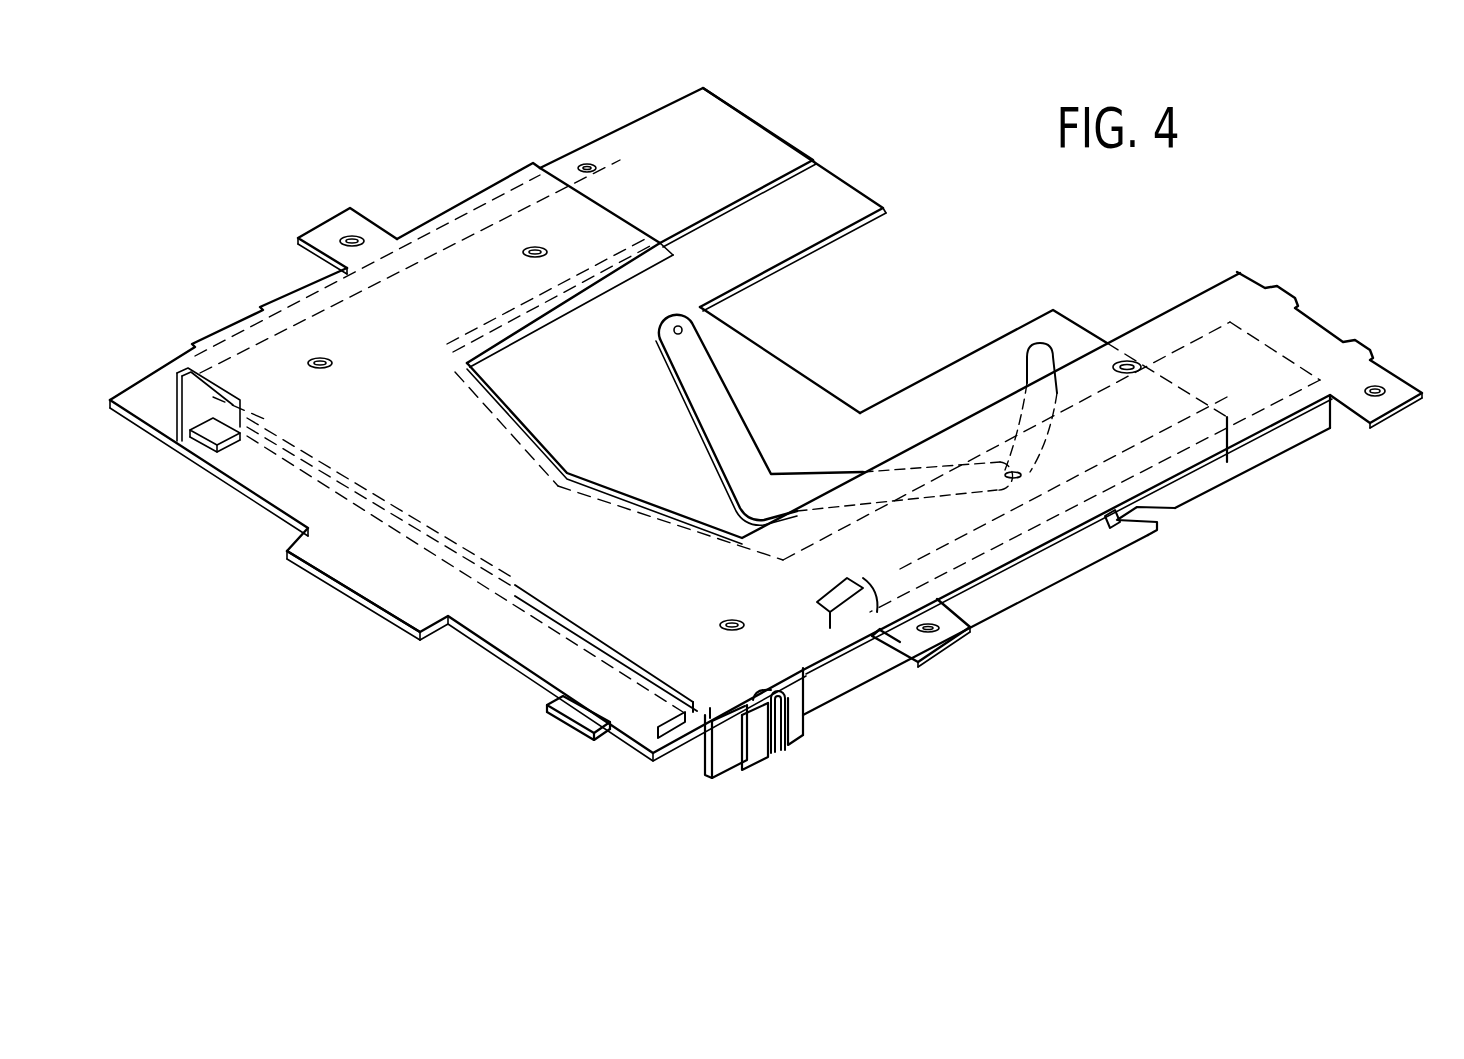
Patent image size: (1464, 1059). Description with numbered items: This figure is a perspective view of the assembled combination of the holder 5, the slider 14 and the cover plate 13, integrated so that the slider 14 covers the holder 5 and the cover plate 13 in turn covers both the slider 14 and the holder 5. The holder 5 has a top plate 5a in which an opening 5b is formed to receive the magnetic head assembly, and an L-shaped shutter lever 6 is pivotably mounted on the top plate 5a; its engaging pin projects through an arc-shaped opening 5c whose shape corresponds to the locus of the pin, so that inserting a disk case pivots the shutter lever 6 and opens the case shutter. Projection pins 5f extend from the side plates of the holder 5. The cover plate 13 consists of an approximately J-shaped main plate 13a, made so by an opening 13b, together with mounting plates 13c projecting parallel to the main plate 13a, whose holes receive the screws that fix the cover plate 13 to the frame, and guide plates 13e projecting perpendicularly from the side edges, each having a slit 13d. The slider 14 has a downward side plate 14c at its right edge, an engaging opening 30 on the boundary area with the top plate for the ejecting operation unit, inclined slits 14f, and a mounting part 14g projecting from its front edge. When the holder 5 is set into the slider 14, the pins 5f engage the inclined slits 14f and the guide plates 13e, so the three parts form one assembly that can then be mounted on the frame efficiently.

The holder 5 is at (847, 172).
The top plate 5a is at (797, 402).
The opening 5b is at (1017, 330).
The arc-shaped opening 5c is at (1043, 343).
The projection pins 5f is at (800, 735).
The shutter lever 6 is at (705, 383).
The cover plate 13 is at (533, 442).
The main plate 13a is at (376, 579).
The opening 13b is at (527, 340).
The mounting plates 13c is at (375, 242).
The slit 13d is at (795, 753).
The guide plates 13e is at (758, 768).
The slider 14 is at (732, 155).
The side plate 14c is at (1007, 582).
The inclined slits 14f is at (812, 712).
The mounting part 14g is at (555, 718).
The engaging opening 30 is at (900, 563).